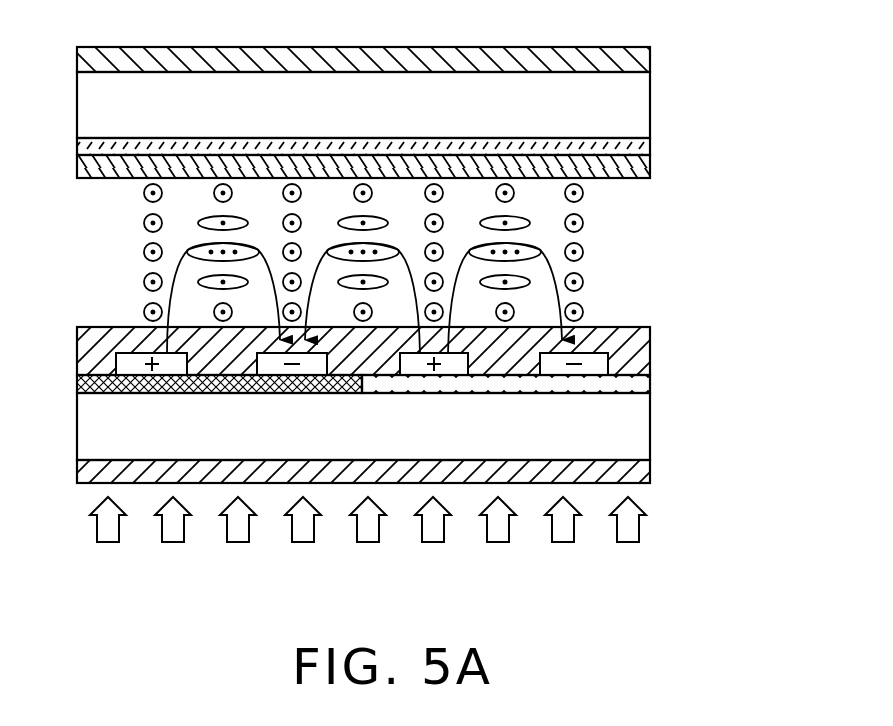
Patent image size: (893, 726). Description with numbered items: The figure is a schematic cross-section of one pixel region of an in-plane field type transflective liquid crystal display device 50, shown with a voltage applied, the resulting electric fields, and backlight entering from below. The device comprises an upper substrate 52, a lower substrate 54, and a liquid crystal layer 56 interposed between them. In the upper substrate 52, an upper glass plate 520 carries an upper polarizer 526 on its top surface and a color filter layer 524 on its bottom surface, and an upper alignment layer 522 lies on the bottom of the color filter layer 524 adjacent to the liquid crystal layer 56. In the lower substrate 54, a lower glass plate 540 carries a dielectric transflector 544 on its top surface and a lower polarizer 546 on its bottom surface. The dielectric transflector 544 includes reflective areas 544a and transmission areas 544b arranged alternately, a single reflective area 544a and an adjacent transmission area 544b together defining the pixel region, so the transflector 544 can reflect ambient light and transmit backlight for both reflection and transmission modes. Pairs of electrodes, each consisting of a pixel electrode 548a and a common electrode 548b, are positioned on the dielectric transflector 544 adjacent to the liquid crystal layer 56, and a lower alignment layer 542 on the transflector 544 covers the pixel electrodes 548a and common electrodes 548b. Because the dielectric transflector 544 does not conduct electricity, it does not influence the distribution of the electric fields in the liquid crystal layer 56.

The liquid crystal display device 50 is at (60, 43).
The upper substrate 52 is at (758, 42).
The upper polarizer 526 is at (640, 62).
The upper glass plate 520 is at (632, 105).
The color filter layer 524 is at (640, 148).
The upper alignment layer 522 is at (640, 165).
The liquid crystal layer 56 is at (588, 252).
The lower substrate 54 is at (758, 355).
The lower alignment layer 542 is at (630, 362).
The dielectric transflector 544 is at (363, 506).
The reflective area 544a is at (293, 385).
The transmission area 544b is at (403, 385).
The pixel electrode 548a is at (130, 365).
The common electrode 548b is at (273, 365).
The lower glass plate 540 is at (628, 420).
The lower polarizer 546 is at (635, 476).